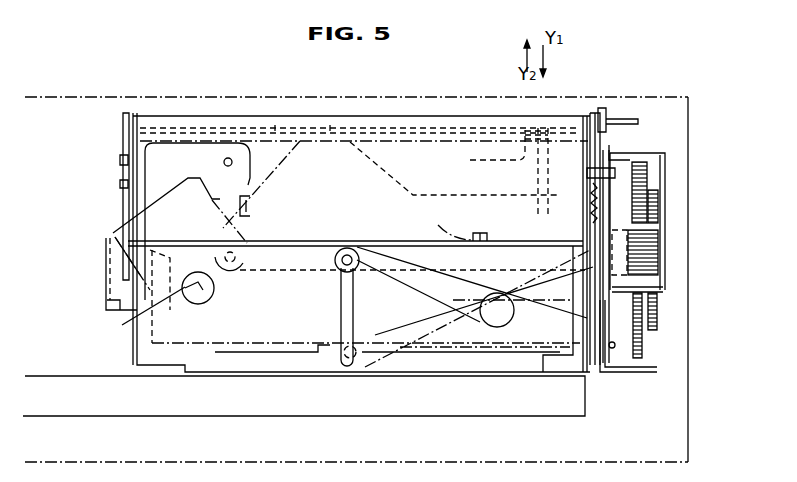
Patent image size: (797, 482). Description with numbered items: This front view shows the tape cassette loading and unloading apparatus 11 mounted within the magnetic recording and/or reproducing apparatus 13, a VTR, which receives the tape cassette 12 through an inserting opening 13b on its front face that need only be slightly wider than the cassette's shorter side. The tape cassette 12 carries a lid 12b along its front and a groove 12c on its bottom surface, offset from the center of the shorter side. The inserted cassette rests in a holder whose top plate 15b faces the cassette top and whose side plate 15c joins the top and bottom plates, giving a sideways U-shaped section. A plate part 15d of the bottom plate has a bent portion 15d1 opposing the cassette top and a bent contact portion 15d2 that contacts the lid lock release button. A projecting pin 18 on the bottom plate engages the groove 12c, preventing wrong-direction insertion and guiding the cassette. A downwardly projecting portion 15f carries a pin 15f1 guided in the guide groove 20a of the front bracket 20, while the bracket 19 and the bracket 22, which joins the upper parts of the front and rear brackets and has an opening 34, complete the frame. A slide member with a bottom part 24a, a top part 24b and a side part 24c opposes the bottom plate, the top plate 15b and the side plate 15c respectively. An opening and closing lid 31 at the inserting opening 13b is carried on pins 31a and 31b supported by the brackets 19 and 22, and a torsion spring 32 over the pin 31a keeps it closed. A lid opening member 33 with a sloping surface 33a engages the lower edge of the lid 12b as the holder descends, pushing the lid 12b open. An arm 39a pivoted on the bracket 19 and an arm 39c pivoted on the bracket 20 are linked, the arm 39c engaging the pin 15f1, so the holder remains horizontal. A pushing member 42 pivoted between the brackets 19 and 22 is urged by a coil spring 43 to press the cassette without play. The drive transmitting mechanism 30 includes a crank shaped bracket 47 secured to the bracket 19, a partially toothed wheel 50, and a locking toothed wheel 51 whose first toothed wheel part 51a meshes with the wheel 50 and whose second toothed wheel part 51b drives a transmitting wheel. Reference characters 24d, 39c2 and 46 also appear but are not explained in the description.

The tape cassette loading and unloading apparatus 11 is at (306, 114).
The tape cassette 12 is at (262, 140).
The lid 12b is at (143, 180).
The groove 12c is at (444, 223).
The magnetic recording and/or reproducing apparatus 13 is at (90, 97).
The inserting opening 13b is at (402, 140).
The top plate 15b is at (540, 148).
The side plate 15c is at (590, 185).
The plate part 15d is at (380, 150).
The bent portion 15d1 is at (338, 128).
The bent contact portion 15d2 is at (250, 206).
The downwardly projecting portion 15f is at (302, 272).
The pin 15f1 is at (343, 272).
The projecting pin 18 is at (488, 236).
The bracket 19 is at (640, 124).
The bracket 20 is at (212, 366).
The guide groove 20a is at (327, 360).
The bracket 22 is at (122, 150).
The bottom part 24a is at (537, 248).
The top part 24b is at (545, 125).
The side part 24c is at (618, 152).
The deck recess 24d is at (470, 160).
The drive transmitting mechanism 30 is at (665, 216).
The opening and closing lid 31 is at (460, 114).
The pin 31a is at (606, 118).
The pin 31b is at (132, 112).
The torsion spring 32 is at (597, 112).
The lid opening member 33 is at (106, 273).
The sloping surface 33a is at (160, 250).
The opening 34 is at (137, 302).
The arm 39a is at (617, 362).
The arm 39c is at (480, 352).
The arm guide 39c2 is at (585, 282).
The pushing member 42 is at (233, 140).
The coil spring 43 is at (650, 190).
The gear shaft 46 is at (664, 290).
The crank shaped bracket 47 is at (666, 157).
The partially toothed wheel 50 is at (645, 345).
The locking toothed wheel 51 is at (652, 272).
The first toothed wheel part 51a is at (655, 258).
The second toothed wheel part 51b is at (605, 243).